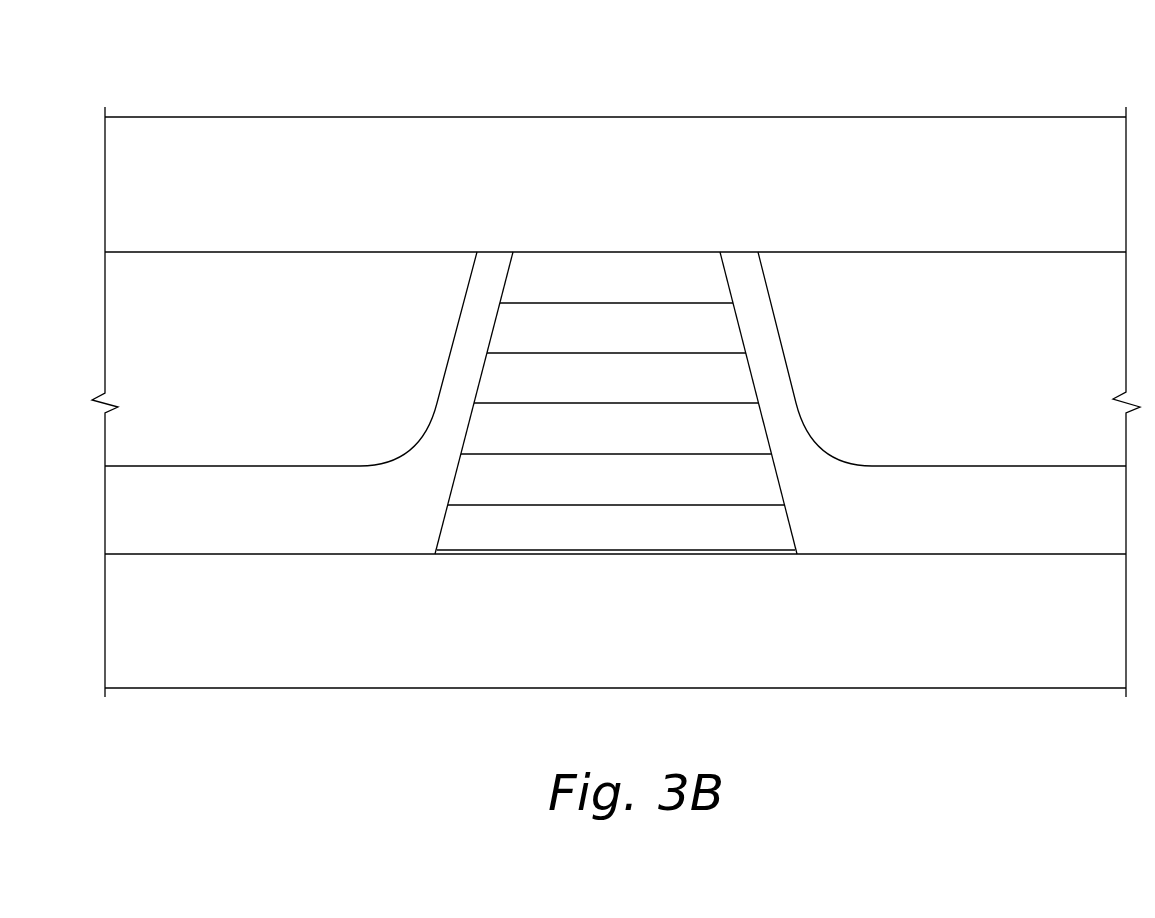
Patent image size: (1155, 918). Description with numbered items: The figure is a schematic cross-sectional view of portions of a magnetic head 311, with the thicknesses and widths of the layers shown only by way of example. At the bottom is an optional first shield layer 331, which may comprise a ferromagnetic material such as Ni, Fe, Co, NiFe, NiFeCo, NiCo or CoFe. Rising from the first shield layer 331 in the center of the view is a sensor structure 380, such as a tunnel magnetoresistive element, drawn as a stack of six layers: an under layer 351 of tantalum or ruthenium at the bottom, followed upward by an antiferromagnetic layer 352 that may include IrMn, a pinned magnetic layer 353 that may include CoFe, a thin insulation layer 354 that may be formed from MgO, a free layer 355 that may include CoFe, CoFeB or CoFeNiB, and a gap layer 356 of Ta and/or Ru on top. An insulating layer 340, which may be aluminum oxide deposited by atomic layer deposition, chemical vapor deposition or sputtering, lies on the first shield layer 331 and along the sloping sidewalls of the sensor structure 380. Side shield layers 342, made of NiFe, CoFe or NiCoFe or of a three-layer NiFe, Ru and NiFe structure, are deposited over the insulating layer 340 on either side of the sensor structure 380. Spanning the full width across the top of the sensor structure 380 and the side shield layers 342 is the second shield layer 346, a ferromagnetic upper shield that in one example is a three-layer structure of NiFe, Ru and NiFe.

The magnetic head 311 is at (1007, 54).
The first shield layer 331 is at (594, 632).
The insulating layer 340 is at (236, 523).
The side shield layers 342 is at (236, 357).
The second shield layer 346 is at (594, 198).
The under layer 351 is at (594, 540).
The antiferromagnetic layer 352 is at (594, 490).
The pinned magnetic layer 353 is at (594, 439).
The insulation layer 354 is at (594, 389).
The free layer 355 is at (594, 338).
The gap layer 356 is at (594, 288).
The sensor structure 380 is at (441, 515).